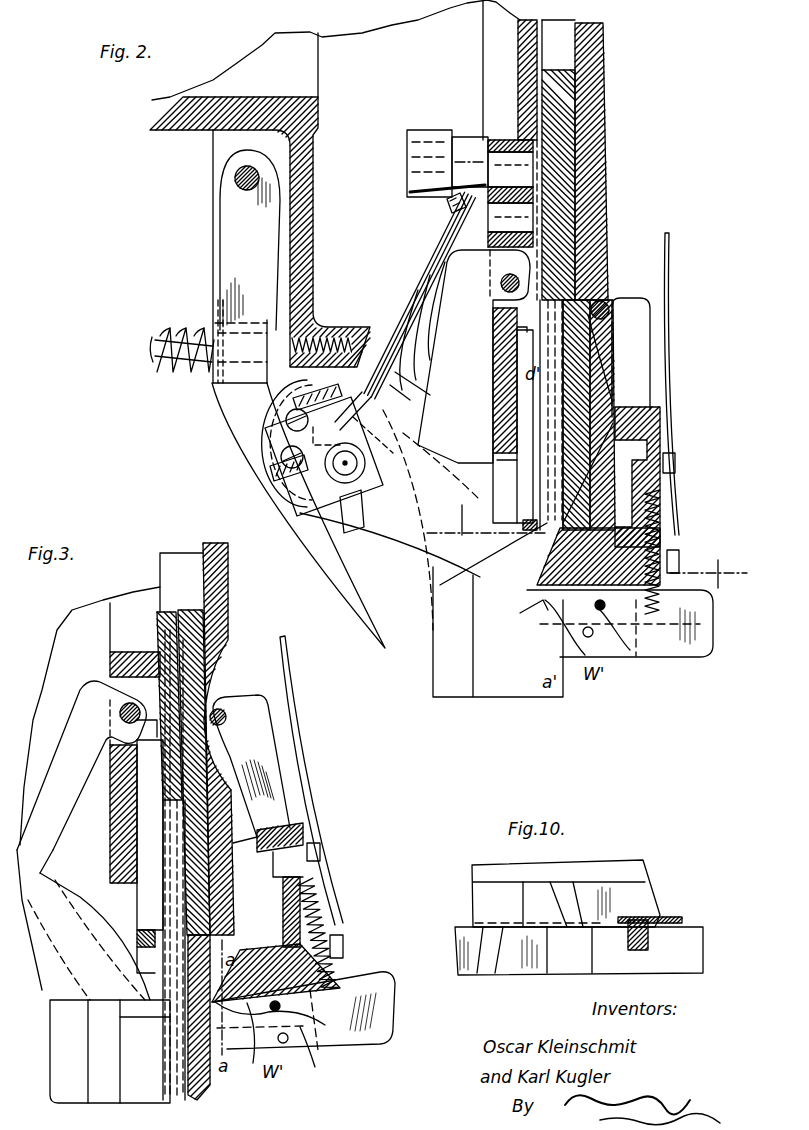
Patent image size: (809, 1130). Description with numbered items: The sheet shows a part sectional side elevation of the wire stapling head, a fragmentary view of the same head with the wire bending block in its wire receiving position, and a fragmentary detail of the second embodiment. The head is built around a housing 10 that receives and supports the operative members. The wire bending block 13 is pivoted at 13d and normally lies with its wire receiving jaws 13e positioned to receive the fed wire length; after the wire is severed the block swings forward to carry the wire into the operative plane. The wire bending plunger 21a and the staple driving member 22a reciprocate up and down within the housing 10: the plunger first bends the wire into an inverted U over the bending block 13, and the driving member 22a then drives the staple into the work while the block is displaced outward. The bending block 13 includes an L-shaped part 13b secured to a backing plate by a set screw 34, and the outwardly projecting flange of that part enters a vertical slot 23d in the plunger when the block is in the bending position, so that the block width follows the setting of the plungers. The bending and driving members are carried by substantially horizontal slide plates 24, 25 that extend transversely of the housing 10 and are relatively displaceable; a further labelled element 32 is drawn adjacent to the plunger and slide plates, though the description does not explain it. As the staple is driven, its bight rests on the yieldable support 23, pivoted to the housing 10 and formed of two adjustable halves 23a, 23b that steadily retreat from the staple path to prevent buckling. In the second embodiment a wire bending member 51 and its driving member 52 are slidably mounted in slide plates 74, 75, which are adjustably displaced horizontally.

In FIG. 2, the housing 10 is at (308, 122).
In FIG. 3, the housing 10 is at (228, 606).
In FIG. 2, the wire bending block 13 is at (628, 343).
In FIG. 3, the wire bending block 13 is at (265, 767).
In FIG. 2, the bending block part 13b is at (662, 455).
In FIG. 3, the bending block part 13b is at (290, 843).
In FIG. 2, the pivot 13d is at (610, 305).
In FIG. 3, the pivot 13d is at (225, 710).
In FIG. 2, the wire receiving jaws 13e is at (607, 647).
In FIG. 3, the wire receiving jaws 13e is at (311, 1037).
In FIG. 2, the wire bending plunger 21a is at (530, 405).
In FIG. 3, the wire bending plunger 21a is at (152, 840).
In FIG. 2, the staple driving member 22a is at (560, 382).
In FIG. 3, the staple driving member 22a is at (175, 1020).
In FIG. 2, the yieldable support 23 is at (453, 340).
In FIG. 3, the yieldable support 23 is at (66, 765).
In FIG. 2, the staple support half 23a is at (397, 527).
In FIG. 3, the staple support half 23a is at (62, 1000).
In FIG. 2, the staple support half 23b is at (379, 519).
In FIG. 3, the staple support half 23b is at (130, 1051).
In FIG. 2, the vertical slot 23d is at (548, 635).
In FIG. 2, the slide plate 24 is at (528, 482).
In FIG. 3, the slide plate 24 is at (145, 908).
In FIG. 2, the slide plate 25 is at (387, 540).
In FIG. 3, the slide plate 25 is at (140, 940).
In FIG. 2, the pin 32 is at (527, 487).
In FIG. 2, the set screw 34 is at (675, 473).
In FIG. 3, the set screw 34 is at (320, 863).
In FIG. 10, the wire bending member 51 is at (648, 943).
In FIG. 10, the driving member 52 is at (673, 918).
In FIG. 10, the slide plate 74 is at (643, 887).
In FIG. 10, the slide plate 75 is at (513, 965).